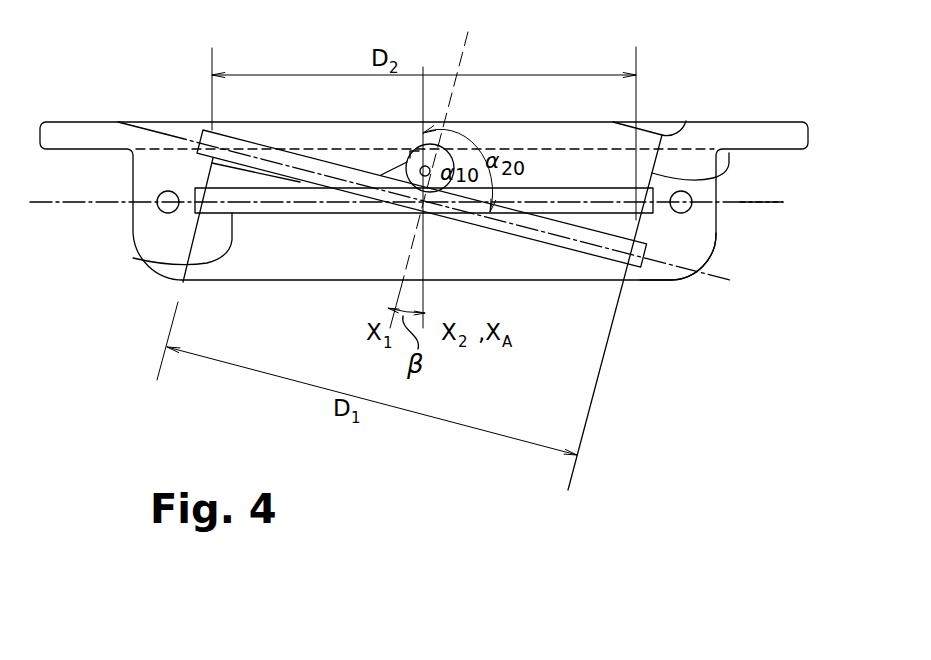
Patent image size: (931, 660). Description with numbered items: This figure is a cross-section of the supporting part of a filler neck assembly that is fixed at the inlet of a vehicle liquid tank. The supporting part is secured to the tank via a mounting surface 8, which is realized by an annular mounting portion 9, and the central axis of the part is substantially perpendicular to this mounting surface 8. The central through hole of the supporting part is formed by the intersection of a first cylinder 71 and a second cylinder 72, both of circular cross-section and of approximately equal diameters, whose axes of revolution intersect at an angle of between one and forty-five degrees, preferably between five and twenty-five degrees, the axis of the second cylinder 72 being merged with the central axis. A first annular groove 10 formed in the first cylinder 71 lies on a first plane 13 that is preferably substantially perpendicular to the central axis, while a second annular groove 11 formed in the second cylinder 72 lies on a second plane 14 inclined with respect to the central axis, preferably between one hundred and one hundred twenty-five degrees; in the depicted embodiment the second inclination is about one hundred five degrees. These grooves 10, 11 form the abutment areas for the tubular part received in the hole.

The mounting surface 8 is at (83, 150).
The annular mounting portion 9 is at (80, 143).
The first annular groove 10 is at (140, 260).
The second annular groove 11 is at (251, 141).
The first plane 13 is at (753, 202).
The second plane 14 is at (705, 274).
The first cylinder 71 is at (729, 163).
The second cylinder 72 is at (655, 280).